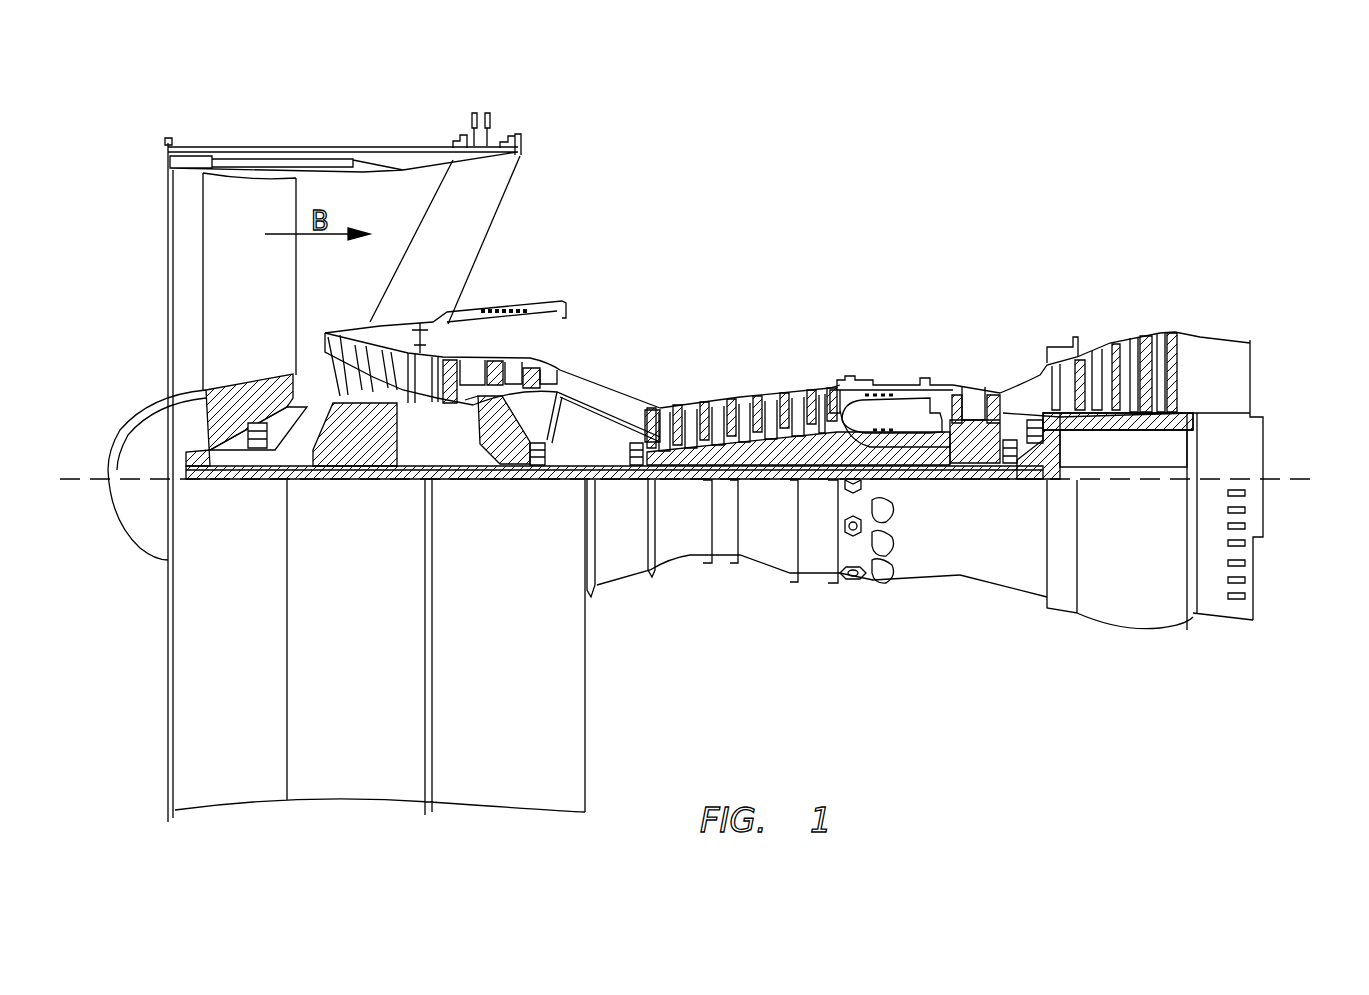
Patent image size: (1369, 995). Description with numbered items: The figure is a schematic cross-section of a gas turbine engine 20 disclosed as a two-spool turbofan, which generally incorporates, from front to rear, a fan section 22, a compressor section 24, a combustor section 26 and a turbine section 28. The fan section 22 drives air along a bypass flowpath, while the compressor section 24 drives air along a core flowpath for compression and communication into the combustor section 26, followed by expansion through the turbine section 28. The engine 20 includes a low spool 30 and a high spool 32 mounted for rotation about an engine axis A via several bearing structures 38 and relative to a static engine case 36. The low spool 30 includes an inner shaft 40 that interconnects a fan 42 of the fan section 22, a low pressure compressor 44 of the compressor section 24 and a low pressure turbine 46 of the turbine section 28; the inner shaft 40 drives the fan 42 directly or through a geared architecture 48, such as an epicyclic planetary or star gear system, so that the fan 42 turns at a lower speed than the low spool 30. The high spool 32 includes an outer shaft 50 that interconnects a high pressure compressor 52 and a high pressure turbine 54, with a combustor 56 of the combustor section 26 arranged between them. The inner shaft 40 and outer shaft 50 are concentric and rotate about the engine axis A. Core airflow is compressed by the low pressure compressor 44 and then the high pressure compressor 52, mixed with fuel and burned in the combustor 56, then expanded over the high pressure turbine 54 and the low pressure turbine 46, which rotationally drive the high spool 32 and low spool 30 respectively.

The gas turbine engine 20 is at (934, 191).
The fan section 22 is at (425, 127).
The compressor section 24 is at (435, 282).
The combustor section 26 is at (842, 282).
The turbine section 28 is at (1190, 282).
The low spool 30 is at (770, 490).
The high spool 32 is at (812, 445).
The static engine case 36 is at (830, 590).
The bearing structures 38 is at (257, 452).
The inner shaft 40 is at (612, 482).
The fan 42 is at (240, 328).
The low pressure compressor 44 is at (512, 372).
The low pressure turbine 46 is at (1122, 345).
The geared architecture 48 is at (380, 460).
The outer shaft 50 is at (887, 460).
The high pressure compressor 52 is at (753, 445).
The high pressure turbine 54 is at (973, 380).
The combustor 56 is at (898, 415).
The engine axis A is at (1320, 470).